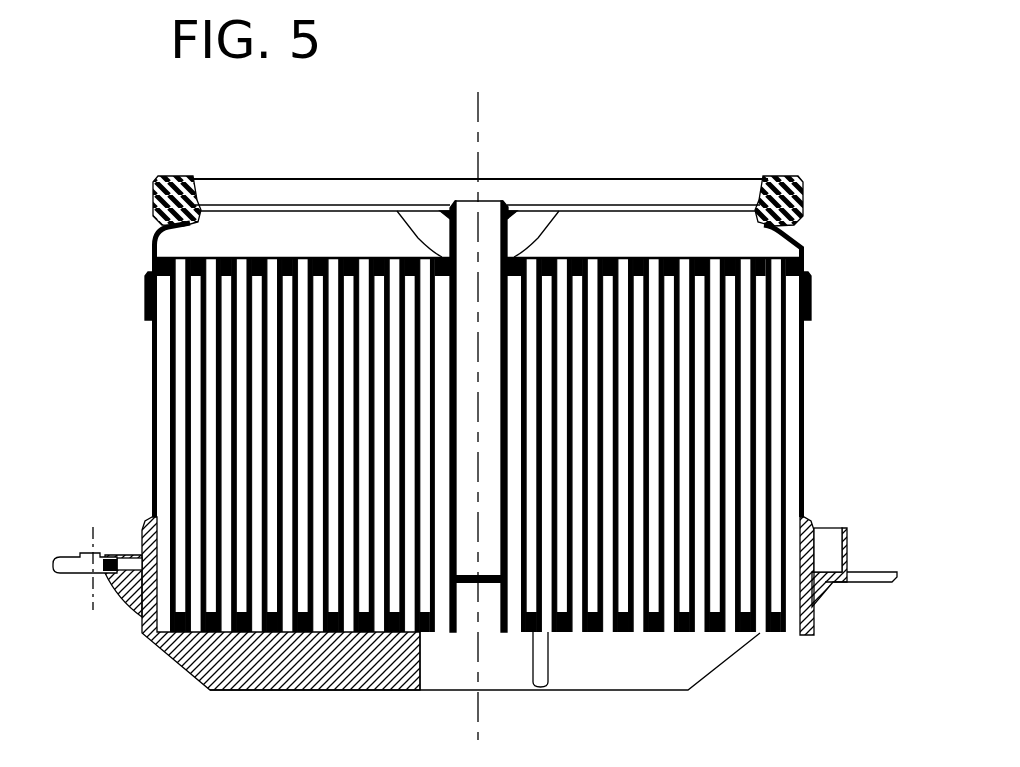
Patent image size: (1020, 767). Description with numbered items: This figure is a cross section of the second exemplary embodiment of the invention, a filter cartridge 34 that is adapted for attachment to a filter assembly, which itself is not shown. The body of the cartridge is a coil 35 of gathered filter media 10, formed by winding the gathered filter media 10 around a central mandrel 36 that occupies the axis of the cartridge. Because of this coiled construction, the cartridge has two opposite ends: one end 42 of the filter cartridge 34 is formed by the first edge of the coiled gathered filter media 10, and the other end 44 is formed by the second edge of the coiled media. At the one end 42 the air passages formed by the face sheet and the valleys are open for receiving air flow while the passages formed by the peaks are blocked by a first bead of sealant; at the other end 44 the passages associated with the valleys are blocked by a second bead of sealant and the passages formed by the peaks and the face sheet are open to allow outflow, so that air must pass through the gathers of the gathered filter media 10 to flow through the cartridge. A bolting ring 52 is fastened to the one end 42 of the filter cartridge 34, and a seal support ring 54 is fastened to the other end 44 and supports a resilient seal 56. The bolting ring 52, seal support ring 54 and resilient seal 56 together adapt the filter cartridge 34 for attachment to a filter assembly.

The filter cartridge 34 is at (757, 118).
The central mandrel 36 is at (507, 202).
The resilient seal 56 is at (803, 203).
The other end of the filter cartridge 44 is at (773, 257).
The seal support ring 54 is at (805, 250).
The gathered filter media 10 is at (806, 408).
The coil 35 is at (810, 457).
The bolting ring 52 is at (818, 595).
The one end of the filter cartridge 42 is at (738, 635).